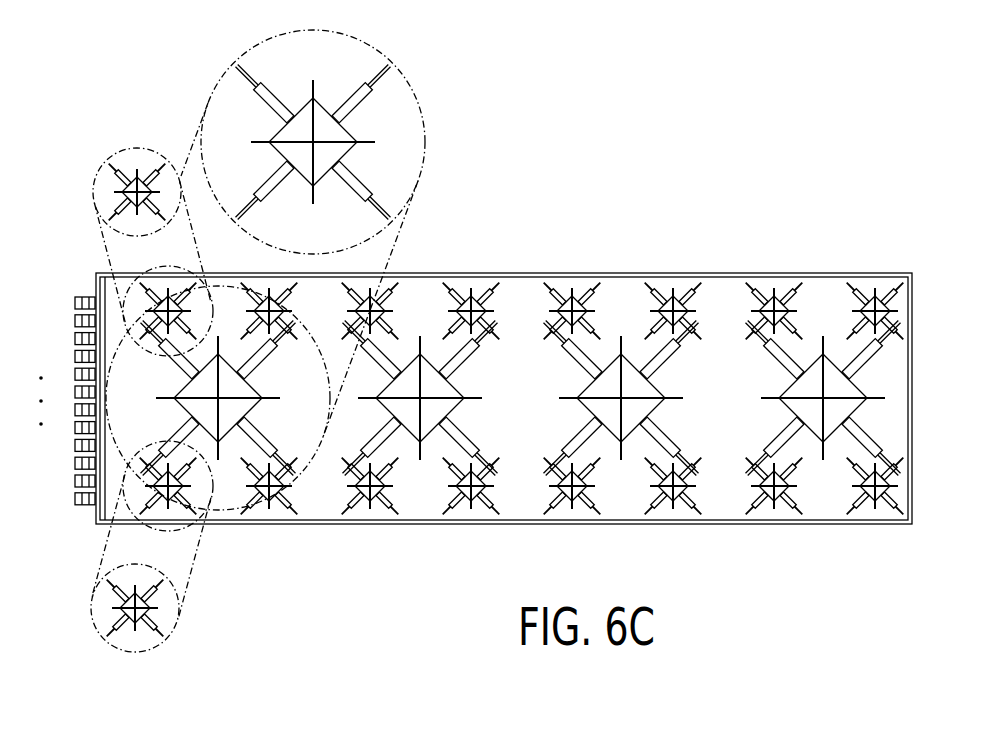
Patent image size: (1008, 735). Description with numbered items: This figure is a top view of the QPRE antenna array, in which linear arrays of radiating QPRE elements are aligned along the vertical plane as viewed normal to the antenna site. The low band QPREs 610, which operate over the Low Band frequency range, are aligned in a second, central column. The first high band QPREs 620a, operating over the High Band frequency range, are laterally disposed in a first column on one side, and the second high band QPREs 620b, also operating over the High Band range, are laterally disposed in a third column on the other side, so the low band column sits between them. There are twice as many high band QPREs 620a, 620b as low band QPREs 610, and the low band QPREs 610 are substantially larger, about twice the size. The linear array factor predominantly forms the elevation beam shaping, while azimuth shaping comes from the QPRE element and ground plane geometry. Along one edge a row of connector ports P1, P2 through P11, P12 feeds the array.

The low band QPRE 610 is at (422, 141).
The first high band QPRE 620a is at (105, 162).
The second high band QPRE 620b is at (172, 625).
The port 1 P1 is at (76, 303).
The port 2 P2 is at (75, 321).
The port 11 P11 is at (75, 481).
The port 12 P12 is at (75, 499).